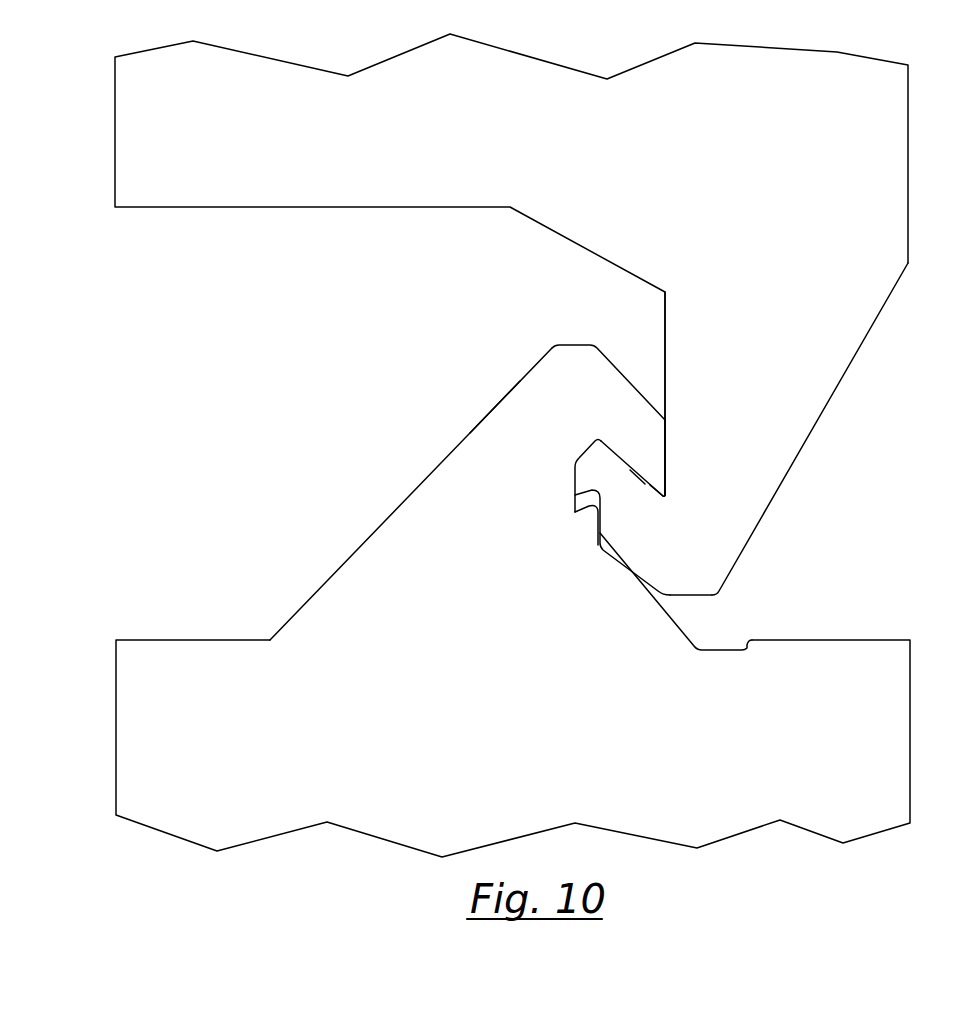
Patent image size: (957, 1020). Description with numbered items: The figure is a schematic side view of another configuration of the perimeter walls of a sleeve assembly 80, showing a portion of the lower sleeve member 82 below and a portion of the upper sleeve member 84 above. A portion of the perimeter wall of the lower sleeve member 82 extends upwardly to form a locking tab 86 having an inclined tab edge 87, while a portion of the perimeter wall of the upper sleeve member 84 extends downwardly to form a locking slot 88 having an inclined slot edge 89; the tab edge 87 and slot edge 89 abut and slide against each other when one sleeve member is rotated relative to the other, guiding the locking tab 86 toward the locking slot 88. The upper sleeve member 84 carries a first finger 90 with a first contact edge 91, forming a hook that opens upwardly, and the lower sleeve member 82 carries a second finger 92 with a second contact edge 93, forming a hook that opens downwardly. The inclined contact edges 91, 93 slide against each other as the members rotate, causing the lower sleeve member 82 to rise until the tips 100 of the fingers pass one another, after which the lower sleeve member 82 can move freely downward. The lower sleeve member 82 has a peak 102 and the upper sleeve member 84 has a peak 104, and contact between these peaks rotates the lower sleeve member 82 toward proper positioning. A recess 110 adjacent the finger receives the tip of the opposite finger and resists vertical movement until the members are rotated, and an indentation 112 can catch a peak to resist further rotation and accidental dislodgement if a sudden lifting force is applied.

The sleeve assembly 80 is at (262, 430).
The lower sleeve member 82 is at (152, 678).
The upper sleeve member 84 is at (155, 160).
The locking tab 86 is at (433, 548).
The tab edge 87 is at (490, 412).
The locking slot 88 is at (758, 455).
The slot edge 89 is at (810, 435).
The first finger 90 is at (595, 458).
The first contact edge 91 is at (621, 457).
The second finger 92 is at (652, 458).
The second contact edge 93 is at (638, 478).
The tips of the fingers 100 is at (665, 495).
The peak of the lower sleeve member 102 is at (568, 343).
The peak of the upper sleeve member 104 is at (690, 597).
The recess 110 is at (573, 475).
The indentation 112 is at (722, 650).